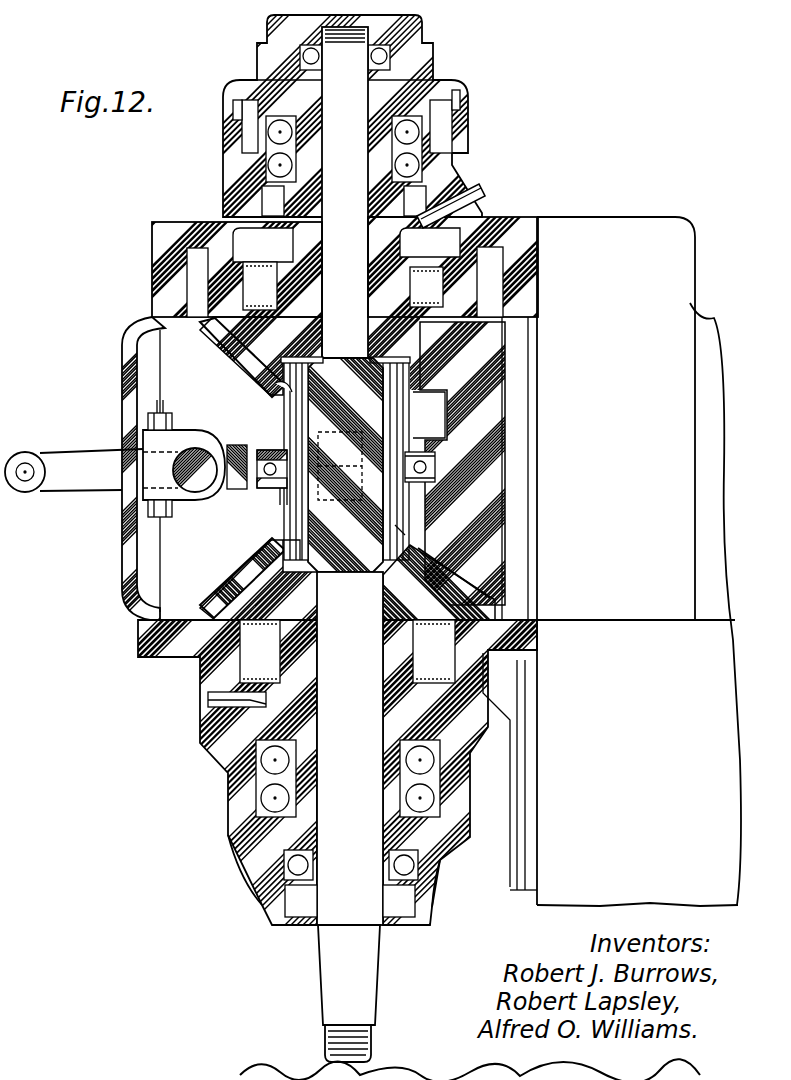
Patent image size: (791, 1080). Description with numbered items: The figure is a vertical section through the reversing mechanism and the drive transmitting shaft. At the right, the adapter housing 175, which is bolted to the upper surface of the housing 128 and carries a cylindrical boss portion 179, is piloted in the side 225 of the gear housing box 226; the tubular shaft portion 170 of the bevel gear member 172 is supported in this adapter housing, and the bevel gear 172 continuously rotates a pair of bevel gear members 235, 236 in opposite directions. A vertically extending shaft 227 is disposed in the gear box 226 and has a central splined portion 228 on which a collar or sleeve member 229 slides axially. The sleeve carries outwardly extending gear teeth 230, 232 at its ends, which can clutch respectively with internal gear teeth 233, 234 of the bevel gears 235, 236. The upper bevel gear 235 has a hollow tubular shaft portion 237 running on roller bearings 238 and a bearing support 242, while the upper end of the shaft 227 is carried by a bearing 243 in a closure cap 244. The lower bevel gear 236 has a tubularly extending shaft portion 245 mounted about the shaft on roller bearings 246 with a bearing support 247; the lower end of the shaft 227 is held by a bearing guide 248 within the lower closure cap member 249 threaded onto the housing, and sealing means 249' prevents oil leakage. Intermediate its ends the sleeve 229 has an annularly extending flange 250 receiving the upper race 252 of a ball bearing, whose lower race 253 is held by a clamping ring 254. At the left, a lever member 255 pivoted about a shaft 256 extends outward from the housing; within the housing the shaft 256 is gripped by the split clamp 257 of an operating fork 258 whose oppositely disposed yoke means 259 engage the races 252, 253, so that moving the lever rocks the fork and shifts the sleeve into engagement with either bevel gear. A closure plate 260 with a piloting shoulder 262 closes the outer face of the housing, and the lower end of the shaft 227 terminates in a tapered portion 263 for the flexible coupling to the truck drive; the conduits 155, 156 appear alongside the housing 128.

The housing 128 is at (633, 834).
The conduit 155 is at (533, 884).
The conduit 156 is at (505, 838).
The tubular shaft portion 170 is at (493, 490).
The bevel gear member 172 is at (503, 591).
The adapter housing 175 is at (623, 228).
The cylindrical boss portion 179 is at (714, 322).
The side of gear housing box 225 is at (522, 225).
The gear housing box 226 is at (160, 250).
The vertically extending shaft 227 is at (323, 803).
The central splined portion 228 is at (395, 470).
The collar or sleeve member 229 is at (398, 407).
The gear teeth 230 is at (400, 428).
The gear teeth 232 is at (406, 531).
The internal gear teeth 233 is at (275, 388).
The internal gear teeth 234 is at (293, 555).
The bevel gear member 235 is at (243, 357).
The bevel gear member 236 is at (224, 588).
The hollow tubular shaft portion 237 is at (308, 200).
The roller bearings 238 is at (228, 218).
The bearing support 242 is at (412, 146).
The bearing 243 is at (410, 57).
The closure cap 244 is at (433, 73).
The tubularly extending shaft portion 245 is at (307, 712).
The roller bearings 246 is at (250, 657).
The bearing support 247 is at (265, 797).
The bearing guide 248 is at (278, 873).
The lower closure cap member 249 is at (208, 870).
The sealing means 249' is at (424, 909).
The annularly extending flange 250 is at (283, 437).
The upper race 252 is at (248, 445).
The lower race 253 is at (258, 492).
The clamping ring 254 is at (283, 508).
The lever member 255 is at (72, 460).
The shaft 256 is at (178, 478).
The split clamp 257 is at (163, 448).
The operating fork 258 is at (233, 488).
The yoke means 259 is at (380, 487).
The closure plate 260 is at (135, 352).
The piloting shoulder 262 is at (161, 330).
The tapered portion 263 is at (333, 947).